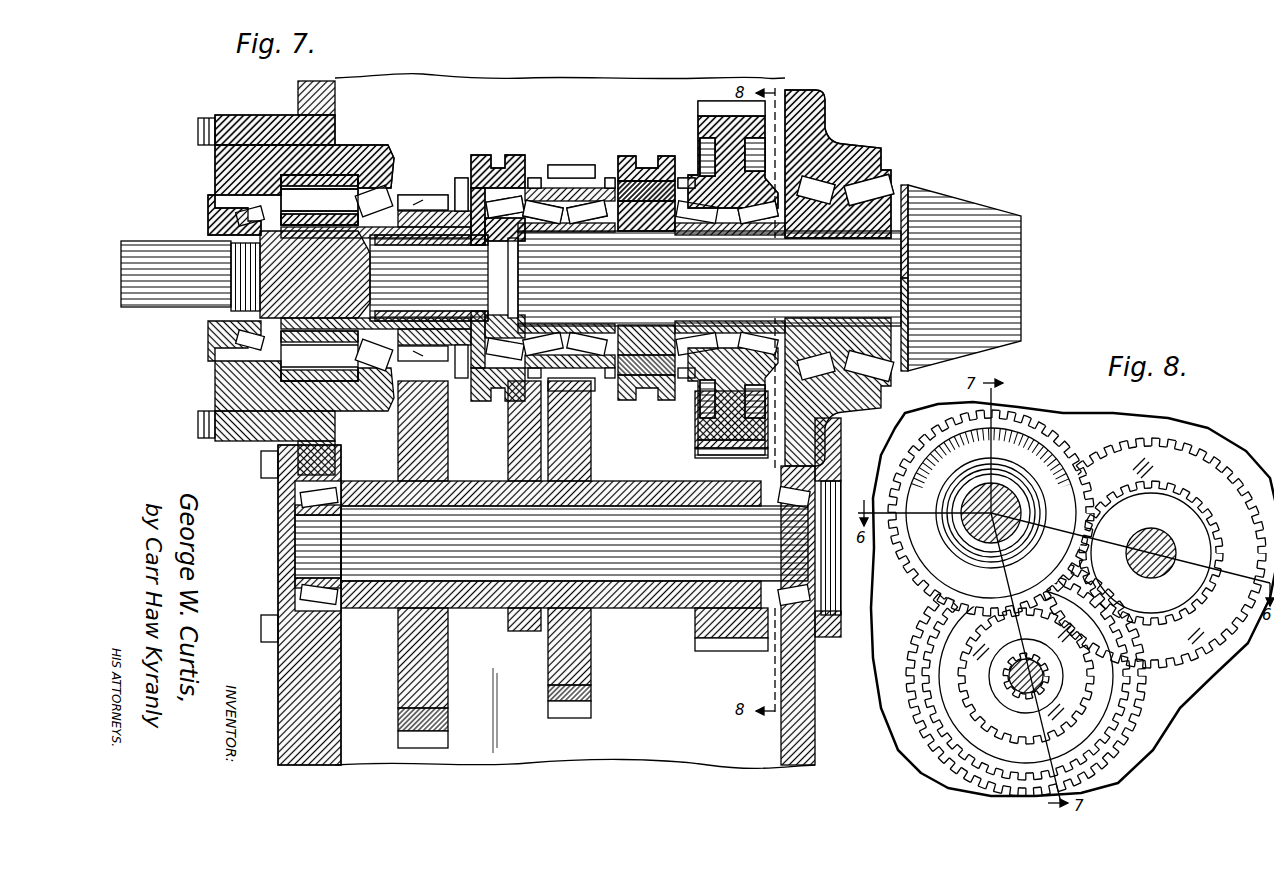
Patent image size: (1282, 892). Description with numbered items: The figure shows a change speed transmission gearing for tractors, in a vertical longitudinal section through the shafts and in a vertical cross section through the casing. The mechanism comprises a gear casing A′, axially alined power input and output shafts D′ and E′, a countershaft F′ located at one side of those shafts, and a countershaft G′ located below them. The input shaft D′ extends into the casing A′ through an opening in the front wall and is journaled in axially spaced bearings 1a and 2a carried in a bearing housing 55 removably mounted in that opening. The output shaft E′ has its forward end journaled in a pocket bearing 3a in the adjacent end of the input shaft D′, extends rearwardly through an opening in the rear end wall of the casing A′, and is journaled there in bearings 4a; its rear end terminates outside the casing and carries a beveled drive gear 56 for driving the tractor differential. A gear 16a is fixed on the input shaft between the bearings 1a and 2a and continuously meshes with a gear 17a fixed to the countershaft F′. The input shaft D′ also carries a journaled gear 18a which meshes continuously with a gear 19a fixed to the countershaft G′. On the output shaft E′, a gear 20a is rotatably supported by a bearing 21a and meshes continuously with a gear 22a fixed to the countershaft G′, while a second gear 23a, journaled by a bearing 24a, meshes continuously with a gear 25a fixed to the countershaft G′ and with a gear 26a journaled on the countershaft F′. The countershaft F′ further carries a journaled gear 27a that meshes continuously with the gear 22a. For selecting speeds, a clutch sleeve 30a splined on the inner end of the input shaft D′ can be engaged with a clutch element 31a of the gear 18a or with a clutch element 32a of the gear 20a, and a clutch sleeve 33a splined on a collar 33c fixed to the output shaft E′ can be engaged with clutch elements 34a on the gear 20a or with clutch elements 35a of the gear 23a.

In FIG. 7, the bearing 1a is at (368, 370).
In FIG. 7, the bearing 2a is at (207, 357).
In FIG. 7, the pocket bearing 3a is at (407, 240).
In FIG. 7, the bearings 4a is at (863, 205).
In FIG. 7, the gear 16a is at (322, 183).
In FIG. 8, the gear 17a is at (1193, 450).
In FIG. 7, the gear 18a is at (425, 187).
In FIG. 7, the gear 19a is at (440, 670).
In FIG. 8, the gear 19a is at (928, 747).
In FIG. 7, the gear 20a is at (565, 157).
In FIG. 7, the bearing 21a is at (585, 207).
In FIG. 7, the gear 22a is at (583, 655).
In FIG. 8, the gear 22a is at (1087, 713).
In FIG. 7, the second gear 23a is at (697, 108).
In FIG. 8, the second gear 23a is at (1030, 413).
In FIG. 7, the bearing 24a is at (700, 212).
In FIG. 7, the gear 25a is at (720, 633).
In FIG. 8, the gear 25a is at (1073, 682).
In FIG. 8, the gear 26a is at (1145, 500).
In FIG. 8, the gear 27a is at (1193, 483).
In FIG. 7, the clutch sleeve 30a is at (490, 147).
In FIG. 7, the clutch element 31a is at (452, 170).
In FIG. 7, the clutch element 32a is at (523, 170).
In FIG. 7, the clutch sleeve 33a is at (638, 148).
In FIG. 7, the collar 33c is at (645, 215).
In FIG. 7, the clutch elements 34a is at (600, 170).
In FIG. 7, the clutch elements 35a is at (683, 170).
In FIG. 7, the bearing housing 55 is at (207, 387).
In FIG. 7, the beveled drive gear 56 is at (948, 215).
In FIG. 7, the gear casing A′ is at (822, 107).
In FIG. 7, the power input shaft D′ is at (157, 285).
In FIG. 7, the power output shaft E′ is at (709, 278).
In FIG. 8, the power output shaft E′ is at (980, 536).
In FIG. 8, the countershaft F′ is at (1138, 538).
In FIG. 7, the countershaft G′ is at (622, 545).
In FIG. 8, the countershaft G′ is at (1000, 670).